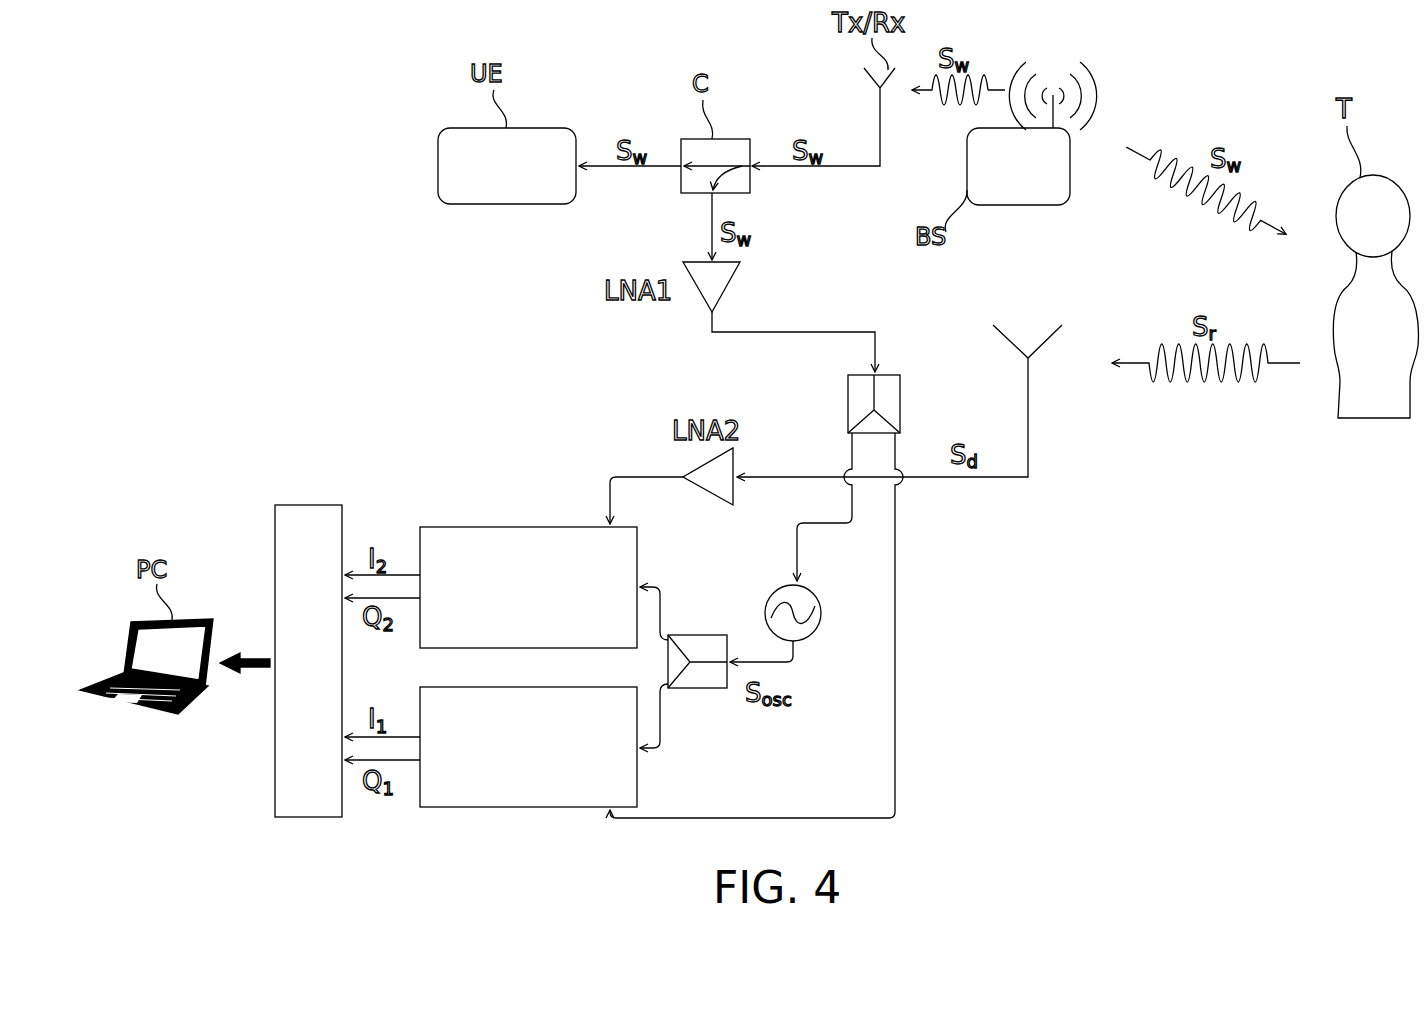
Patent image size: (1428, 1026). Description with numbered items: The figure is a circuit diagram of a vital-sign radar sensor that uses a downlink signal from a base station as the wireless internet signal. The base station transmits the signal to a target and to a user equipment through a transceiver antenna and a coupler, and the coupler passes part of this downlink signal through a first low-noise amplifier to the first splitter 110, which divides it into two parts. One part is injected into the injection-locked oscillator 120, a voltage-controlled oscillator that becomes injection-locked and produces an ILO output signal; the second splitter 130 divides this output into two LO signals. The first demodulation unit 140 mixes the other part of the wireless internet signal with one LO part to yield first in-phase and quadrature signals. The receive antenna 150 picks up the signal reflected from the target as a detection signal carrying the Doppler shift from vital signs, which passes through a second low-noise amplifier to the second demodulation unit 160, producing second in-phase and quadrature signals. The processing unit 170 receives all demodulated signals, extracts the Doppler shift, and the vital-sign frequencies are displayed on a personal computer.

The first splitter 110 is at (900, 404).
The injection-locked oscillator 120 is at (815, 633).
The second splitter 130 is at (690, 635).
The first demodulation unit 140 is at (640, 778).
The receive antenna 150 is at (1045, 342).
The second demodulation unit 160 is at (537, 527).
The processing unit 170 is at (306, 505).